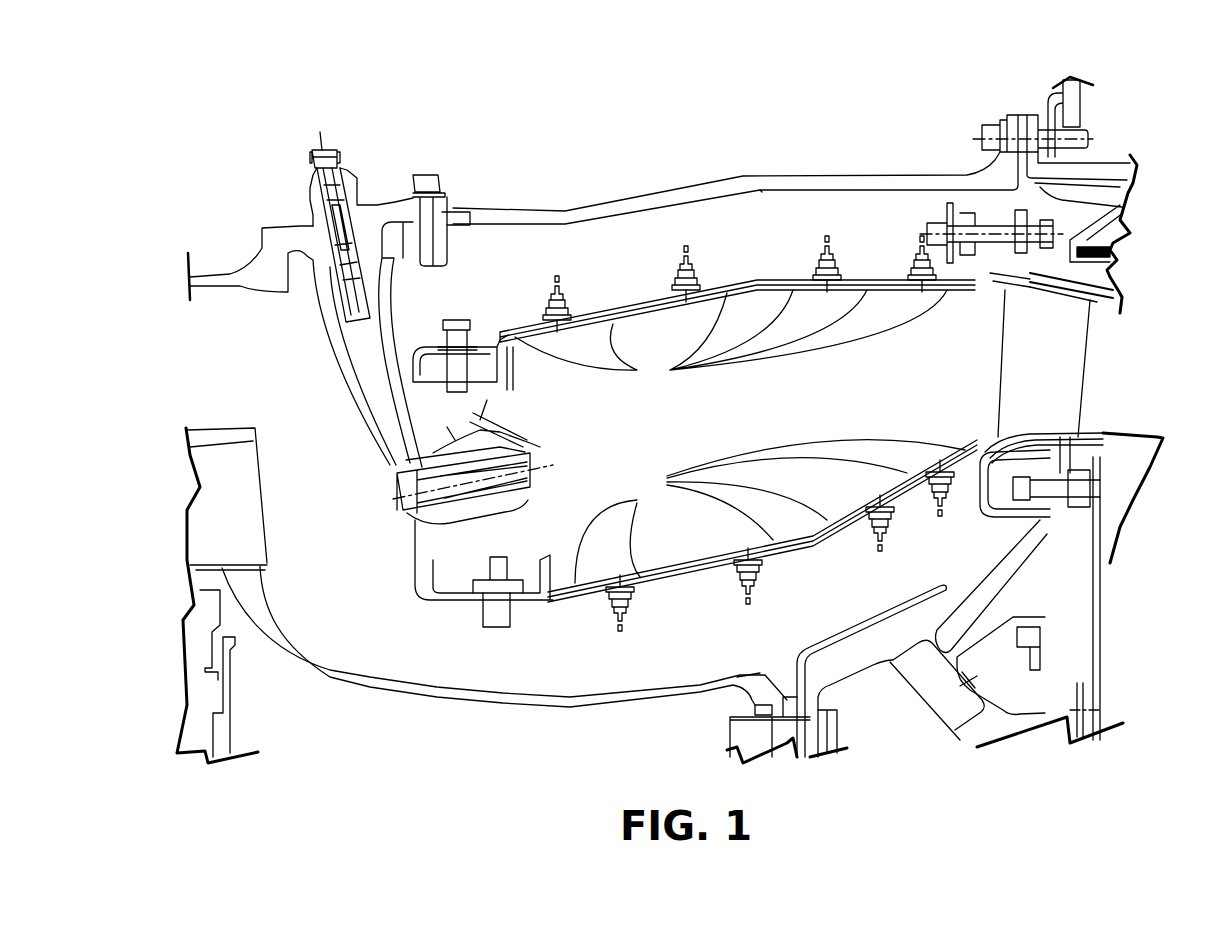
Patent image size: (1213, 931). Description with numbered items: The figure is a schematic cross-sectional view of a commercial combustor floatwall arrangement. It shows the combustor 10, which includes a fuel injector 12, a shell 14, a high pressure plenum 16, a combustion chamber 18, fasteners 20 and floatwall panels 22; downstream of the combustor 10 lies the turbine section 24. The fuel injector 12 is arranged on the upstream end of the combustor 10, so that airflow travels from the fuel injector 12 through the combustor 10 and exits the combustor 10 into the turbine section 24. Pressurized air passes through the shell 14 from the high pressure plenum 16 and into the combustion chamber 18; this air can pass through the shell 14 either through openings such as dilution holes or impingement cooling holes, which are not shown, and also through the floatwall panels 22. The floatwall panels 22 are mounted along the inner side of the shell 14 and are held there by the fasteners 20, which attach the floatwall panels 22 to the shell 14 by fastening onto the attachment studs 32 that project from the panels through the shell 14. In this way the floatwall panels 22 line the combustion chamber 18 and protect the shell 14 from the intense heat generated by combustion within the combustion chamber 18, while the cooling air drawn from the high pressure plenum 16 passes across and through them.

The combustor 10 is at (772, 128).
The fuel injector 12 is at (392, 521).
The shell 14 is at (645, 300).
The high pressure plenum 16 is at (729, 253).
The combustion chamber 18 is at (769, 431).
The fasteners 20 is at (549, 312).
The floatwall panels 22 is at (740, 436).
The turbine section 24 is at (1109, 368).
The attachment studs 32 is at (561, 285).